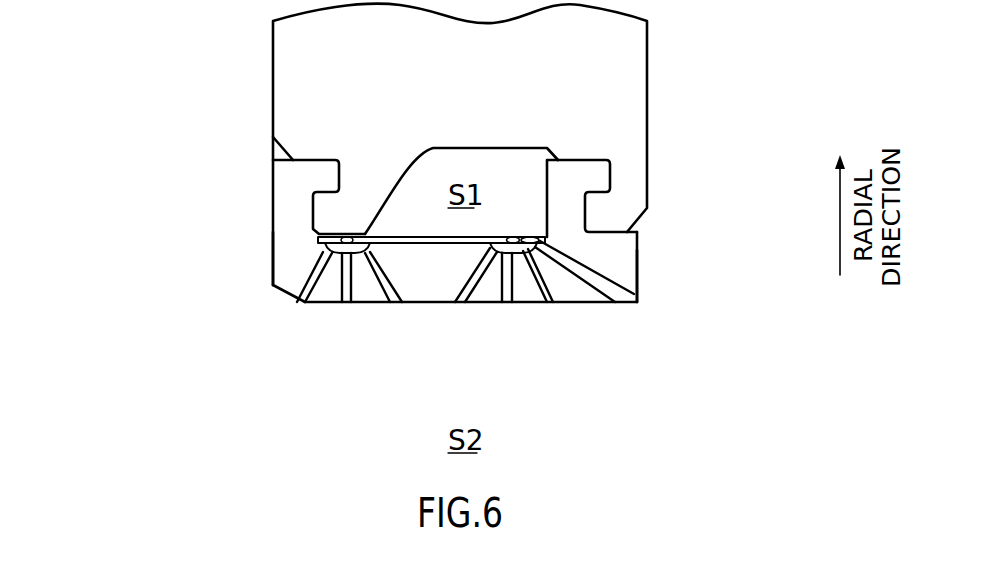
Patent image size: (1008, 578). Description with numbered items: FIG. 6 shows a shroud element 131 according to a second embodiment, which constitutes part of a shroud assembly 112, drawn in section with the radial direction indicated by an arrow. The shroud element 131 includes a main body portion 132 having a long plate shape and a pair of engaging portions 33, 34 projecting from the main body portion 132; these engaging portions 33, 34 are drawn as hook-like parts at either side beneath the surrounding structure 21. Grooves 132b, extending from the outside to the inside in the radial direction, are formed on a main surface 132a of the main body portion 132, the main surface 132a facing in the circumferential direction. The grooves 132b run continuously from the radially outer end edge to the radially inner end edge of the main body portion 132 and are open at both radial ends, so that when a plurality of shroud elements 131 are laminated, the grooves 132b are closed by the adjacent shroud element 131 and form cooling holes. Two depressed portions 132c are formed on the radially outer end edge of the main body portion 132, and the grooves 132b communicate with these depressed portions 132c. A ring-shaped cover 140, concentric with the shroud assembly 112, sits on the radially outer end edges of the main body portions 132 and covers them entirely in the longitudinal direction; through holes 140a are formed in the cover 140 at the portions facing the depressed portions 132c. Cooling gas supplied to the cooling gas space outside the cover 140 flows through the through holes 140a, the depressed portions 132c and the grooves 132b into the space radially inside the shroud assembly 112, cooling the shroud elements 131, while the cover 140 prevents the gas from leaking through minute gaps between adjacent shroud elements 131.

The housing 21 is at (651, 52).
The engaging portion 33 is at (290, 181).
The engaging portion 34 is at (602, 178).
The cover 140 is at (418, 237).
The through hole 140a is at (347, 237).
The main body portion 132 is at (638, 278).
The main surface 132a is at (437, 287).
The groove 132b is at (380, 287).
The depressed portion 132c is at (325, 250).
The shroud element 131 is at (630, 308).
The shroud assembly 112 is at (283, 293).